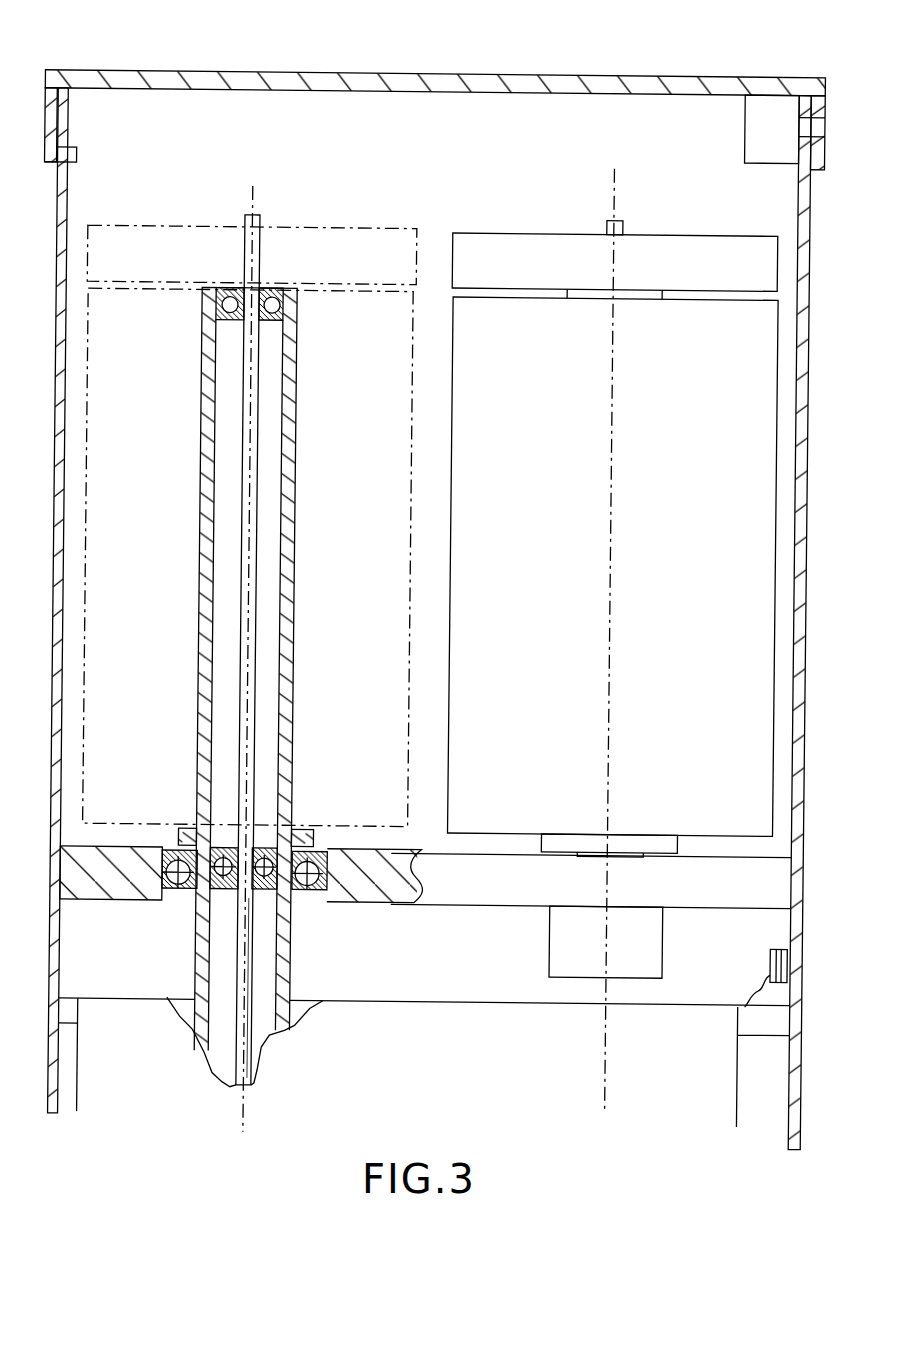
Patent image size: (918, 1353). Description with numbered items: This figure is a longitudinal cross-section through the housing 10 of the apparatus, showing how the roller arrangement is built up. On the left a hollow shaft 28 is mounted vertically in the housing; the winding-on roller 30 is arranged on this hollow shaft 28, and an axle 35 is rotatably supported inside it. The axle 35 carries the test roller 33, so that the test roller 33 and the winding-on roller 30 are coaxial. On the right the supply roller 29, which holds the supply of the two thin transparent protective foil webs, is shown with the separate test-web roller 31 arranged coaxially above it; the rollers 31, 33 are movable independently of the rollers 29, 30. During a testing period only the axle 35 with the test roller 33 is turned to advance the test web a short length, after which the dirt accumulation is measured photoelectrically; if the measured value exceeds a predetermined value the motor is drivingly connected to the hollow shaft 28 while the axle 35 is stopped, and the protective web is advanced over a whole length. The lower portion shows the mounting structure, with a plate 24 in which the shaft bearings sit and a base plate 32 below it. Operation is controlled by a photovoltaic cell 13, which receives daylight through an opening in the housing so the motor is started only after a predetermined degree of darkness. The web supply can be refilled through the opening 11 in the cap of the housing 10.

The housing 10 is at (430, 591).
The opening 11 is at (196, 86).
The photovoltaic cell 13 is at (775, 958).
The mounting plate 24 is at (475, 893).
The hollow shaft 28 is at (291, 634).
The supply roller 29 is at (469, 643).
The winding-on roller 30 is at (409, 568).
The roller 31 is at (494, 243).
The base plate 32 is at (409, 1025).
The test roller 33 is at (372, 240).
The axle 35 is at (250, 546).